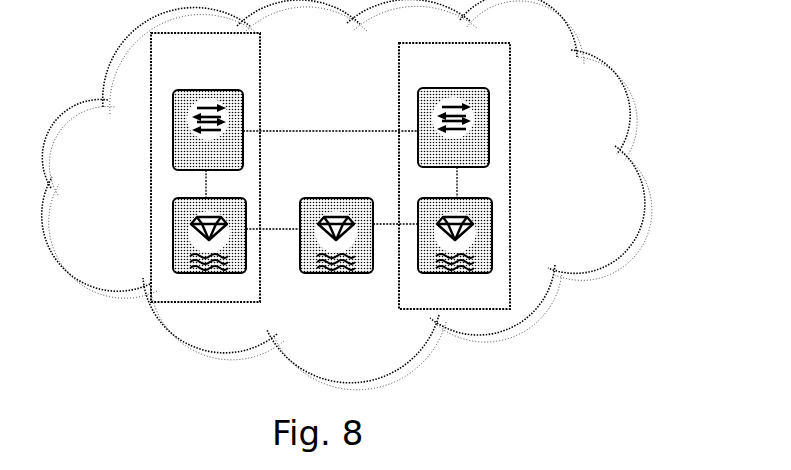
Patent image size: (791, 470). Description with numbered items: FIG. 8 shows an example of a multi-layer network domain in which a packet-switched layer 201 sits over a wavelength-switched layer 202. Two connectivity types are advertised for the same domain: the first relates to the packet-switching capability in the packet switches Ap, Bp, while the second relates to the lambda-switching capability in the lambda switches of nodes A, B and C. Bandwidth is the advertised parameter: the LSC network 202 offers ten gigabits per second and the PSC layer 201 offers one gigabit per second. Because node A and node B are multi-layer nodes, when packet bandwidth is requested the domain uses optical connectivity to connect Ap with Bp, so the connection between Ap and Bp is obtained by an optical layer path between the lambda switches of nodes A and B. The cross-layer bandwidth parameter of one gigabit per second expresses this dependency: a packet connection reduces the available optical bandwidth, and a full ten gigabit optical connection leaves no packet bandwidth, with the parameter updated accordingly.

The packet-switched layer 201 is at (515, 118).
The wavelength-switched layer 202 is at (516, 228).
The packet switch of node A Ap is at (205, 167).
The packet switch of node B Bp is at (454, 176).